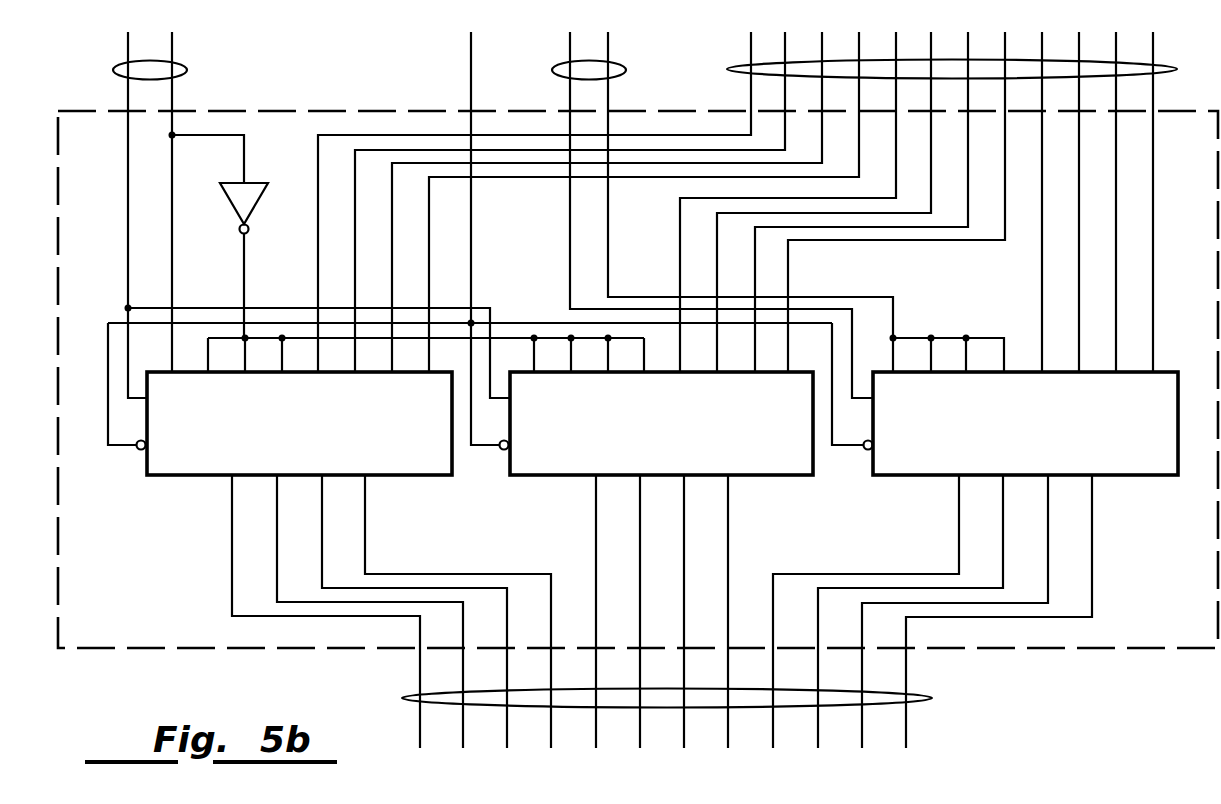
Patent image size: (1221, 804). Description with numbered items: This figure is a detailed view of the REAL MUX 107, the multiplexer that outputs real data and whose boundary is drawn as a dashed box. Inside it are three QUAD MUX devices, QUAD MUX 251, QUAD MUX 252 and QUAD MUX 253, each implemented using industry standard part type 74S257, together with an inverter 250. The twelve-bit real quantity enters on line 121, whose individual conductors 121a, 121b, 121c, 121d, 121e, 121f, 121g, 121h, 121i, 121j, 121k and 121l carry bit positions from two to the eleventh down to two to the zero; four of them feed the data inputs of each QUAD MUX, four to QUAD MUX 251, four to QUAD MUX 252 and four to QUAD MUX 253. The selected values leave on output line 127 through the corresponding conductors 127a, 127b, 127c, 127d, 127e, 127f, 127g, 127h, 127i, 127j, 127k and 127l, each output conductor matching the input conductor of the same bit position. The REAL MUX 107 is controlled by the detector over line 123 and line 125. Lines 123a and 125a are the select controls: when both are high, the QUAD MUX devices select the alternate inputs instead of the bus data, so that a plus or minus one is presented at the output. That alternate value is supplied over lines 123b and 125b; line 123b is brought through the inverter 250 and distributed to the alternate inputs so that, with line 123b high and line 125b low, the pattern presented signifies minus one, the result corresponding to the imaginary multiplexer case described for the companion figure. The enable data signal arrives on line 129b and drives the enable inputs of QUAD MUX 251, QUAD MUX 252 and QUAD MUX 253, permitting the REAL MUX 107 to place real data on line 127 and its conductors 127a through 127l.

The REAL MUX 107 is at (112, 649).
The line 121 is at (1178, 69).
The conductor 121a is at (318, 252).
The conductor 121b is at (355, 284).
The conductor 121c is at (392, 252).
The conductor 121d is at (429, 284).
The conductor 121e is at (680, 252).
The conductor 121f is at (717, 284).
The conductor 121g is at (755, 252).
The conductor 121h is at (788, 284).
The conductor 121i is at (1042, 252).
The conductor 121j is at (1079, 284).
The conductor 121k is at (1116, 252).
The conductor 121l is at (1153, 284).
The line 123 is at (187, 70).
The line 123a is at (128, 92).
The line 123b is at (172, 92).
The line 125 is at (626, 70).
The line 125a is at (570, 92).
The line 125b is at (608, 92).
The line 127 is at (932, 698).
The conductor 127a is at (232, 532).
The conductor 127b is at (277, 557).
The conductor 127c is at (322, 532).
The conductor 127d is at (365, 557).
The conductor 127e is at (596, 532).
The conductor 127f is at (640, 557).
The conductor 127g is at (684, 532).
The conductor 127h is at (728, 557).
The conductor 127i is at (959, 532).
The conductor 127j is at (1003, 557).
The conductor 127k is at (1048, 532).
The conductor 127l is at (1092, 557).
The line 129b is at (471, 56).
The inverter 250 is at (223, 190).
The QUAD MUX 251 is at (168, 477).
The QUAD MUX 252 is at (540, 477).
The QUAD MUX 253 is at (895, 477).